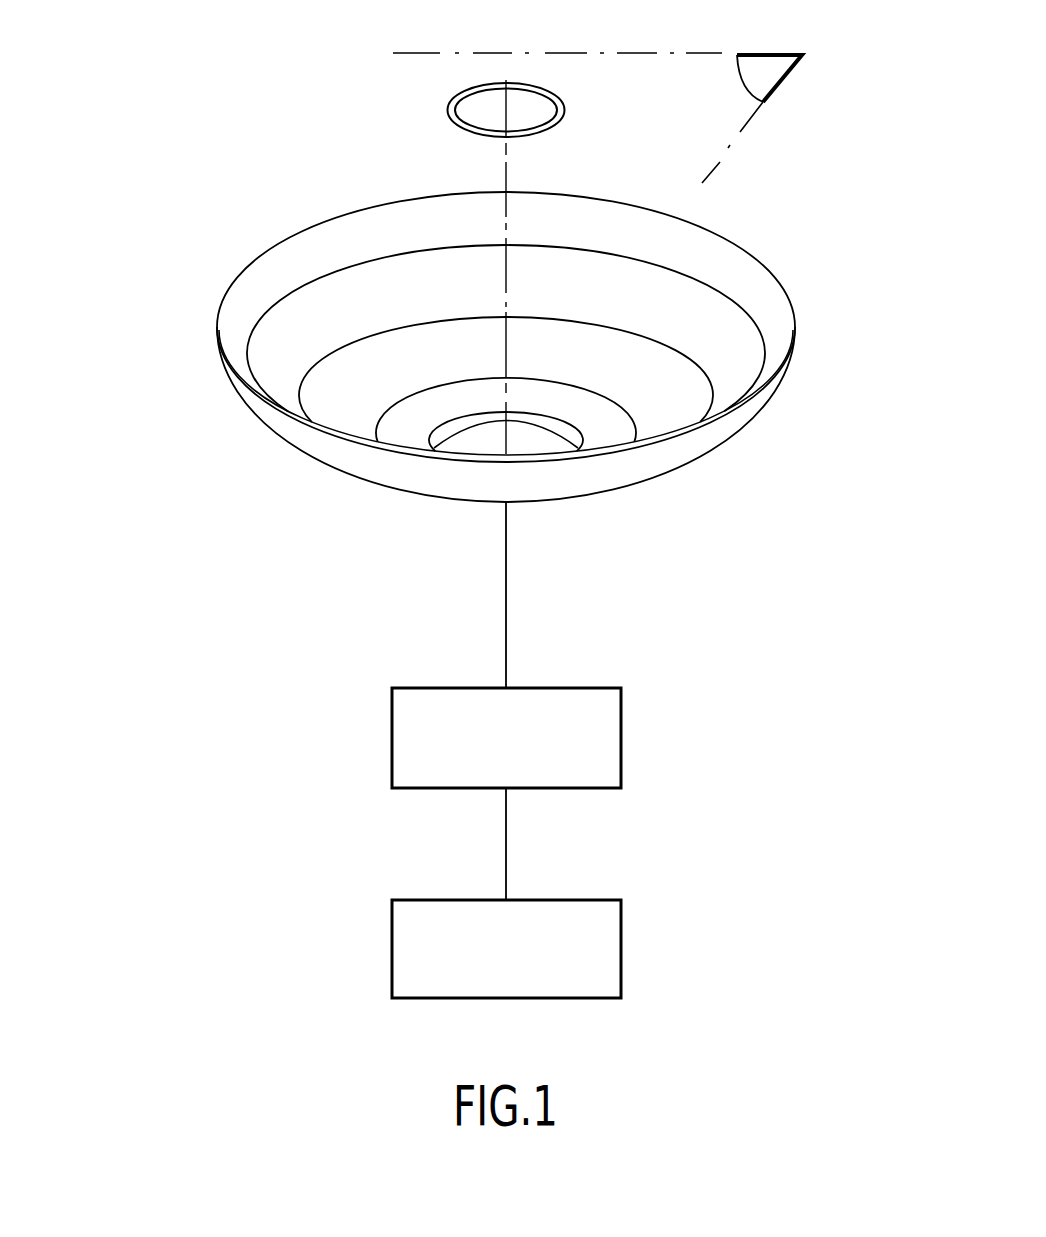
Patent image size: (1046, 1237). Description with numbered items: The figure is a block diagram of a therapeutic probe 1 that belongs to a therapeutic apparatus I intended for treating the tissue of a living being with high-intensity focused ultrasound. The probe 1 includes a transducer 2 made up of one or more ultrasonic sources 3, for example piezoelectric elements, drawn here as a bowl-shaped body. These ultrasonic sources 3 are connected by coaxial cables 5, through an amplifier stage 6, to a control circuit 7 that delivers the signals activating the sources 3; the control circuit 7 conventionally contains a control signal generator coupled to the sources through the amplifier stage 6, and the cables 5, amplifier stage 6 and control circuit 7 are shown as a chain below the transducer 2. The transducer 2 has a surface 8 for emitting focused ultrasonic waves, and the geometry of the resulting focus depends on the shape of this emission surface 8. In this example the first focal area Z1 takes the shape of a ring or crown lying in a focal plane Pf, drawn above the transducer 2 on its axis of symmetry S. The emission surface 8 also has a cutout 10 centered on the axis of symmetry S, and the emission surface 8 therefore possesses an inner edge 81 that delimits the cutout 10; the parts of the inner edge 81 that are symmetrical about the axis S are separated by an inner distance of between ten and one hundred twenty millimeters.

The therapeutic probe 1 is at (180, 353).
The transducer 2 is at (796, 325).
The ultrasonic sources 3 is at (270, 268).
The coaxial cables 5 is at (506, 590).
The amplifier stage 6 is at (511, 746).
The control circuit 7 is at (511, 957).
The emission surface 8 is at (718, 268).
The inner edge 81 is at (455, 430).
The cutout 10 is at (522, 440).
The first focal area Z1 is at (449, 102).
The axis of symmetry S is at (505, 290).
The focal plane Pf is at (768, 68).
The therapeutic apparatus I is at (157, 493).